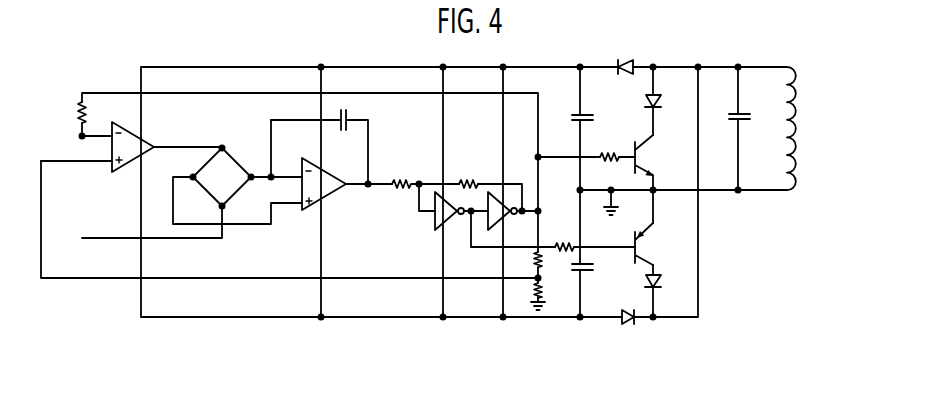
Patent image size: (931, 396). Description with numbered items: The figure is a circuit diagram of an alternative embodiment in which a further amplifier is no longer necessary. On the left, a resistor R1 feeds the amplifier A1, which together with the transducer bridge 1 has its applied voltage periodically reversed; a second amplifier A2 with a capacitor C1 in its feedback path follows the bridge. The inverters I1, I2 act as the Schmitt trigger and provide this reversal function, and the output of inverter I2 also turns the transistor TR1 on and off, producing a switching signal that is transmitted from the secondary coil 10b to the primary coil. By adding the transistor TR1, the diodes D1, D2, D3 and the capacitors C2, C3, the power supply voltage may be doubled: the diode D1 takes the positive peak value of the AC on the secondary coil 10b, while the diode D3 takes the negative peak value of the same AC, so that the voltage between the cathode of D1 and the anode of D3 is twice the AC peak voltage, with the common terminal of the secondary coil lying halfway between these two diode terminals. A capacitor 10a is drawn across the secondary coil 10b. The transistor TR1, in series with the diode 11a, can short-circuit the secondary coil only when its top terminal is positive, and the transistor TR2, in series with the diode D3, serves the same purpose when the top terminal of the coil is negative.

The resistor R1 is at (69, 112).
The amplifier A1 is at (133, 147).
The transducer bridge 1 is at (236, 156).
The amplifier A2 is at (324, 184).
The capacitor C1 is at (319, 140).
The inverter I1 is at (436, 223).
The inverter I2 is at (496, 226).
The capacitor C2 is at (570, 113).
The capacitor C3 is at (592, 265).
The transistor TR1 is at (656, 162).
The transistor TR2 is at (653, 244).
The diode D1 is at (648, 102).
The diode D2 is at (665, 287).
The diode D3 is at (623, 304).
The diode 11a is at (621, 60).
The capacitor 10a is at (737, 113).
The secondary coil 10b is at (794, 144).